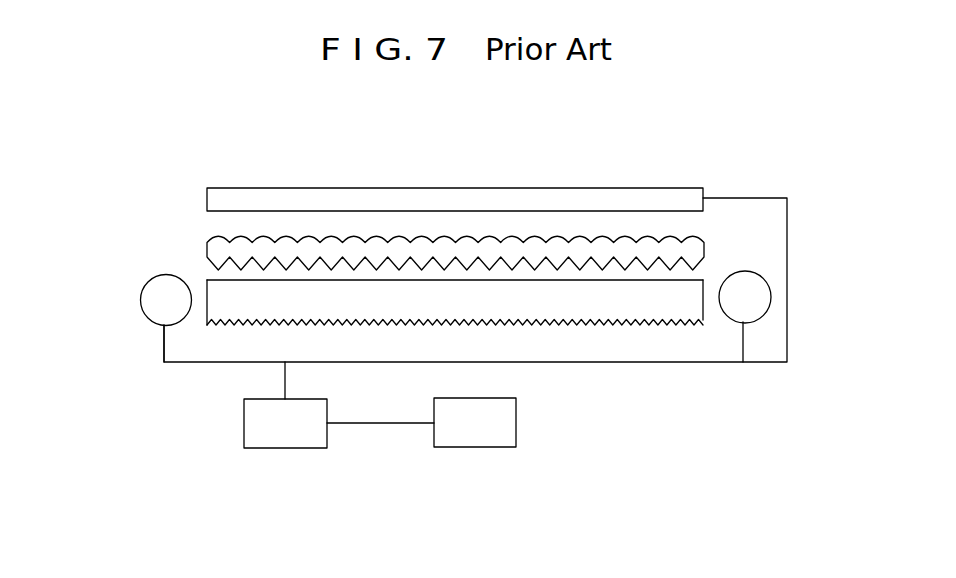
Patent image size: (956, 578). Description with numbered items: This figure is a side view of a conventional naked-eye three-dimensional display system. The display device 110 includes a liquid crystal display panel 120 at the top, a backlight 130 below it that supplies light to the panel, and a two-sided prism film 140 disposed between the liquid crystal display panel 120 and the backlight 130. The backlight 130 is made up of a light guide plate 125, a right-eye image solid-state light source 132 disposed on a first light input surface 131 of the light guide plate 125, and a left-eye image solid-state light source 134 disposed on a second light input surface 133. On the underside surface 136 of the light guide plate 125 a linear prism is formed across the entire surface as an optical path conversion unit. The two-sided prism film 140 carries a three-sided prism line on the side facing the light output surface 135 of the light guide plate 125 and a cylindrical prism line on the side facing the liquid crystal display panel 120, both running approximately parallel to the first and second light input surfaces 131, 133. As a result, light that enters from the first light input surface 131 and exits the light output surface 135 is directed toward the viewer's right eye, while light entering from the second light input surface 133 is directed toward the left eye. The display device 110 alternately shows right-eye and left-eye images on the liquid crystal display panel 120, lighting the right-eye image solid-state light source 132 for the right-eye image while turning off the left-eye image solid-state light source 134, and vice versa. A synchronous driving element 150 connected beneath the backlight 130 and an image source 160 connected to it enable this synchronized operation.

The display device 110 is at (588, 173).
The liquid crystal display panel 120 is at (225, 197).
The light guide plate 125 is at (397, 303).
The backlight 130 is at (198, 273).
The first light input surface 131 is at (703, 305).
The right-eye image solid-state light source 132 is at (760, 296).
The second light input surface 133 is at (207, 307).
The left-eye image solid-state light source 134 is at (150, 303).
The light output surface 135 is at (692, 276).
The underside surface 136 is at (568, 322).
The two-sided prism film 140 is at (213, 248).
The synchronous driving element 150 is at (257, 420).
The image source 160 is at (502, 422).